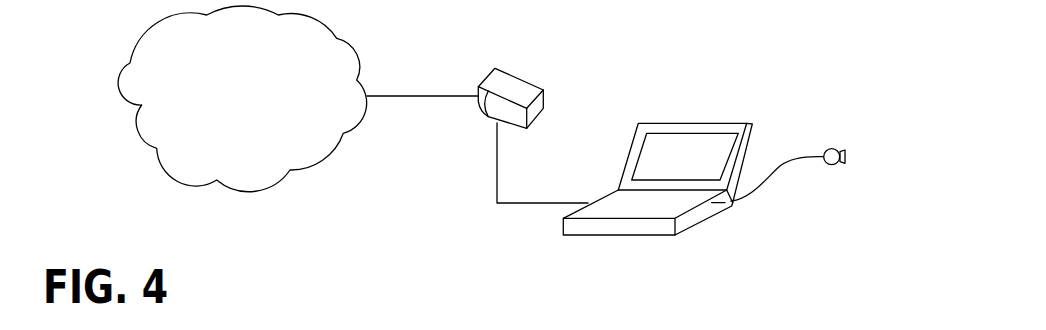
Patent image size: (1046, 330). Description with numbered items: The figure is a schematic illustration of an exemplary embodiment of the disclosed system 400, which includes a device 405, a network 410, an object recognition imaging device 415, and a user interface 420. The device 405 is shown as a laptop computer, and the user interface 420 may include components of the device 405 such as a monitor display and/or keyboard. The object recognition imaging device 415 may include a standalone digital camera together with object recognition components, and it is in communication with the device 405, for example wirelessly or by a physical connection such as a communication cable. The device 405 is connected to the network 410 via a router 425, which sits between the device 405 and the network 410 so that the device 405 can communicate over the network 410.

The system 400 is at (343, 233).
The device 405 is at (657, 152).
The network 410 is at (267, 107).
The object recognition imaging device 415 is at (833, 148).
The user interface 420 is at (645, 197).
The router 425 is at (512, 88).